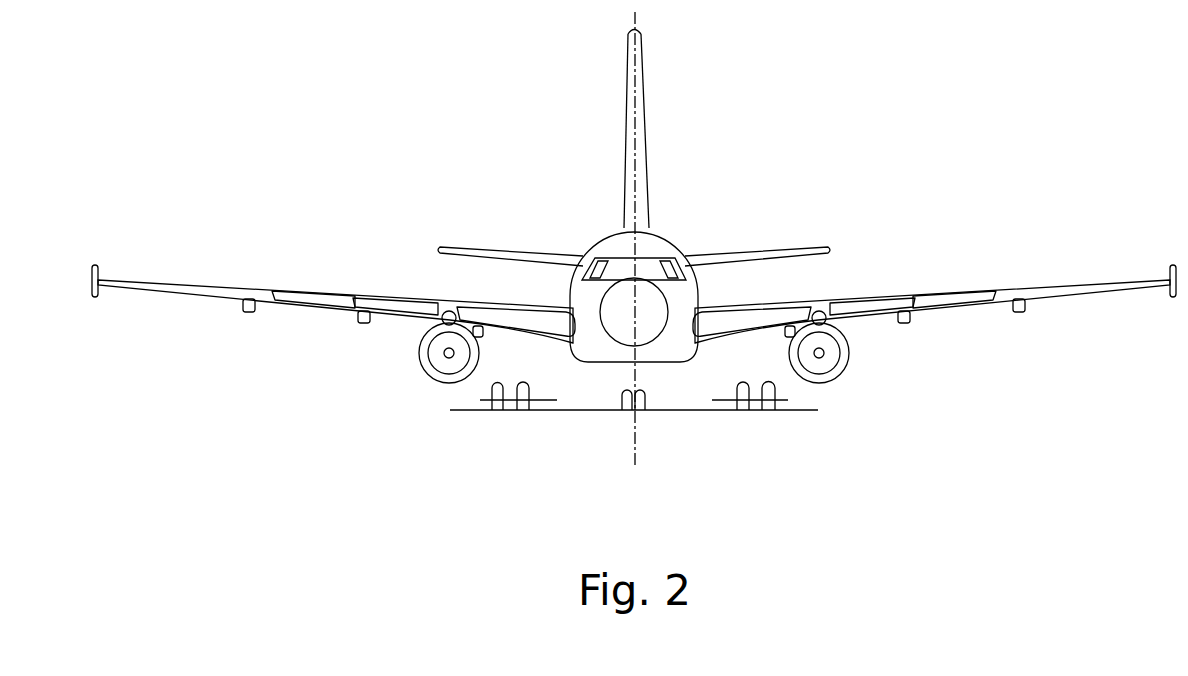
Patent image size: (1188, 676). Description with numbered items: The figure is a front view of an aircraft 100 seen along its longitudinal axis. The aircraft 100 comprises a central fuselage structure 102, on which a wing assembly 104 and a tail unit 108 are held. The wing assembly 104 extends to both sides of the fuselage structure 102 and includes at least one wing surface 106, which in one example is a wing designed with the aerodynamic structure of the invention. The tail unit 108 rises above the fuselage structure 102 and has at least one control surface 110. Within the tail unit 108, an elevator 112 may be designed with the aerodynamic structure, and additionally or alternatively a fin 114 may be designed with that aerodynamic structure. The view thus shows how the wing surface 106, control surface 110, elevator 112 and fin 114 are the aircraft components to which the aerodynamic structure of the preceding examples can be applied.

The aircraft 100 is at (798, 146).
The fuselage structure 102 is at (668, 235).
The wing assembly 104 is at (975, 262).
The wing surface 106 is at (1080, 282).
The tail unit 108 is at (668, 122).
The control surface 110 is at (628, 153).
The elevator 112 is at (471, 248).
The fin 114 is at (628, 82).